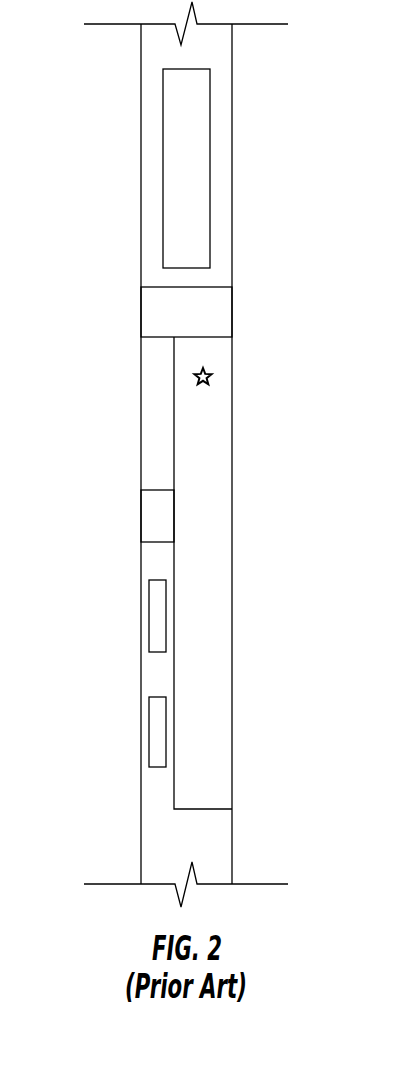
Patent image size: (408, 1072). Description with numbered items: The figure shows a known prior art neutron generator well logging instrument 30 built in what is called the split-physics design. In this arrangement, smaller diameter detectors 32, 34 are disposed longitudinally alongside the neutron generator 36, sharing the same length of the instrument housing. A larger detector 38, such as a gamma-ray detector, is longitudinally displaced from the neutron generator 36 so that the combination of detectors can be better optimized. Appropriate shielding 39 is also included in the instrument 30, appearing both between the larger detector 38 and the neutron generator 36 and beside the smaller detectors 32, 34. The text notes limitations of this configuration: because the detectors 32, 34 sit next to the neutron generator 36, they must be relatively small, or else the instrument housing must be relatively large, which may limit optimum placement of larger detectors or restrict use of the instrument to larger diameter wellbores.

The instrument 30 is at (257, 66).
The detector 32 is at (158, 618).
The detector 34 is at (158, 733).
The neutron generator 36 is at (222, 575).
The larger detector 38 is at (200, 168).
The shielding 39 is at (222, 312).